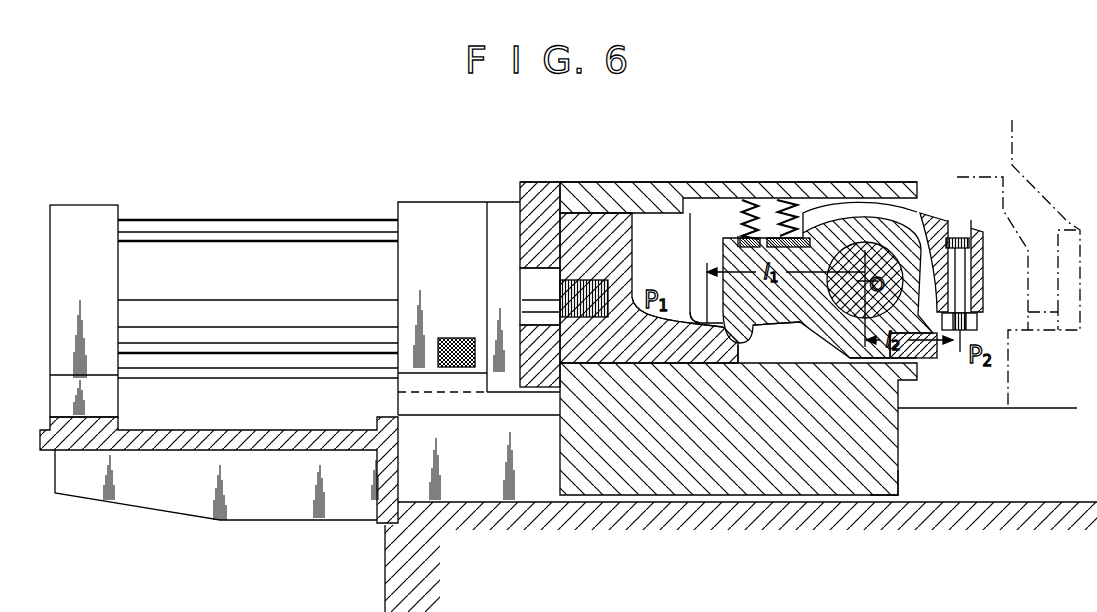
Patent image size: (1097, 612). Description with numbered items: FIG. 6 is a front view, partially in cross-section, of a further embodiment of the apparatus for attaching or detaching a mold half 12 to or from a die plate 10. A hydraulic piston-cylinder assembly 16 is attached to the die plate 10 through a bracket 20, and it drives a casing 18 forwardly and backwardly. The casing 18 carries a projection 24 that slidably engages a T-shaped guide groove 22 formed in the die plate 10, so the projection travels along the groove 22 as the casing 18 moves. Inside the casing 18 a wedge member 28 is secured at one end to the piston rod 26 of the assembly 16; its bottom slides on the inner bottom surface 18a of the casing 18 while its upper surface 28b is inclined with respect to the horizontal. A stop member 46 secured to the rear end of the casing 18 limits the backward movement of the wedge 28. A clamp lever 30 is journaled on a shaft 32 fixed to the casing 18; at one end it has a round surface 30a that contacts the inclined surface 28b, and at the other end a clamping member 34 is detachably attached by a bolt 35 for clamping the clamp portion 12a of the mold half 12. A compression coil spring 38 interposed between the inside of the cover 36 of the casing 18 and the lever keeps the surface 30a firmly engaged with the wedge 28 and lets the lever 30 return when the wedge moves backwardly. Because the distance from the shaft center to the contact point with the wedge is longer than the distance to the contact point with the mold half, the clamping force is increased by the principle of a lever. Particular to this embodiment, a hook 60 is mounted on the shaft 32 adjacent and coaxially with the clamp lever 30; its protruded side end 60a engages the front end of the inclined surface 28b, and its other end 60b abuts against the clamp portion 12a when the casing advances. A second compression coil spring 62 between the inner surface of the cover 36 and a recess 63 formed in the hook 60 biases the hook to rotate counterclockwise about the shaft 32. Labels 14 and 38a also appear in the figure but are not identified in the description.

The die plate 10 is at (400, 600).
The mold half 12 is at (1013, 133).
The clamp portion 12a is at (1037, 400).
The slide assembly 14 is at (433, 184).
The hydraulic piston-cylinder assembly 16 is at (248, 262).
The casing 18 is at (572, 180).
The inner bottom surface 18a is at (745, 362).
The bracket 20 is at (162, 500).
The T-shaped guide groove 22 is at (985, 502).
The projection 24 is at (902, 493).
The piston rod 26 is at (530, 289).
The wedge member 28 is at (594, 218).
The upper surface 28b is at (655, 323).
The clamp lever 30 is at (848, 211).
The round surface 30a is at (700, 314).
The shaft 32 is at (882, 256).
The clamping member 34 is at (975, 322).
The bolt 35 is at (953, 244).
The cover 36 is at (669, 197).
The compression coil spring 38 is at (791, 205).
The spring leaf 38a is at (806, 216).
The stop member 46 is at (531, 196).
The hook like member 60 is at (848, 348).
The protruded side end 60a is at (770, 343).
The other end 60b is at (930, 360).
The compression coil spring 62 is at (746, 200).
The recess 63 is at (738, 237).